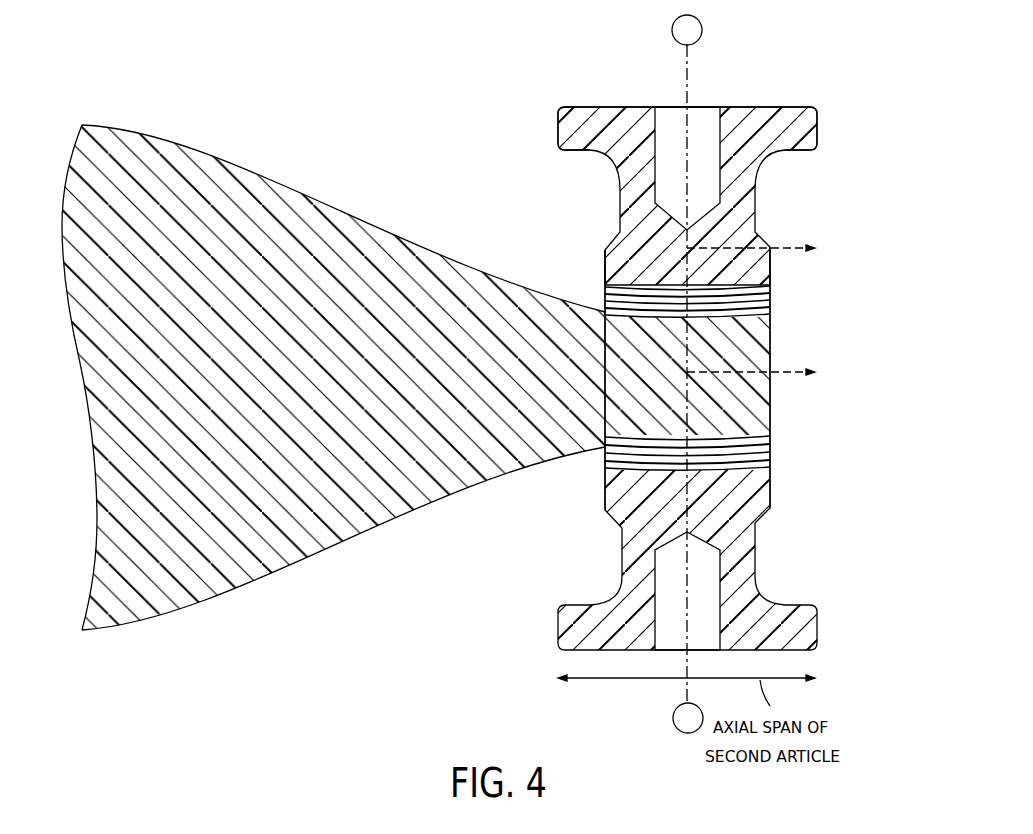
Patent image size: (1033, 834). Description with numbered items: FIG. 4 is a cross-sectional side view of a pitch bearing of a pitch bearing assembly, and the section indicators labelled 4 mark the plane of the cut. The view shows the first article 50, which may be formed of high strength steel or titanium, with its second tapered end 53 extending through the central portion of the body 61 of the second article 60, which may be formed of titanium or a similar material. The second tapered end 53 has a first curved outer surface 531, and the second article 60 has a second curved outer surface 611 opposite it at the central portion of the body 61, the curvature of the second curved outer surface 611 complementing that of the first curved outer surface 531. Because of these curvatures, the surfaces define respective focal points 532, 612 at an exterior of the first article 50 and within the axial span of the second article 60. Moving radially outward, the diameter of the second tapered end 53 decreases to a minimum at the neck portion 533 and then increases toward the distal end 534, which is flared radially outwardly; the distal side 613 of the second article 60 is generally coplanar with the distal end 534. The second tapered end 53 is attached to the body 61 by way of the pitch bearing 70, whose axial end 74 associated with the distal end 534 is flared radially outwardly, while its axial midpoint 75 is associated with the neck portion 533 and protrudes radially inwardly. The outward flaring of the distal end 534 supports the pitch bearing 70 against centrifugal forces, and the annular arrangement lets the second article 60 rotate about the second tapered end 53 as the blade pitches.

The first article 50 is at (452, 357).
The first curved outer surface 531 is at (398, 243).
The second tapered end 53 is at (415, 493).
The neck portion 533 is at (640, 372).
The distal end 534 is at (773, 395).
The second article 60 is at (692, 174).
The body 61 is at (610, 118).
The second curved outer surface 611 is at (623, 272).
The distal side 613 is at (760, 268).
The axial end 74 is at (762, 297).
The pitch bearing 70 is at (777, 460).
The axial midpoint 75 is at (690, 508).
The focal point 532 is at (734, 374).
The focal point 612 is at (700, 26).
The section line of FIG. 4 is at (762, 311).